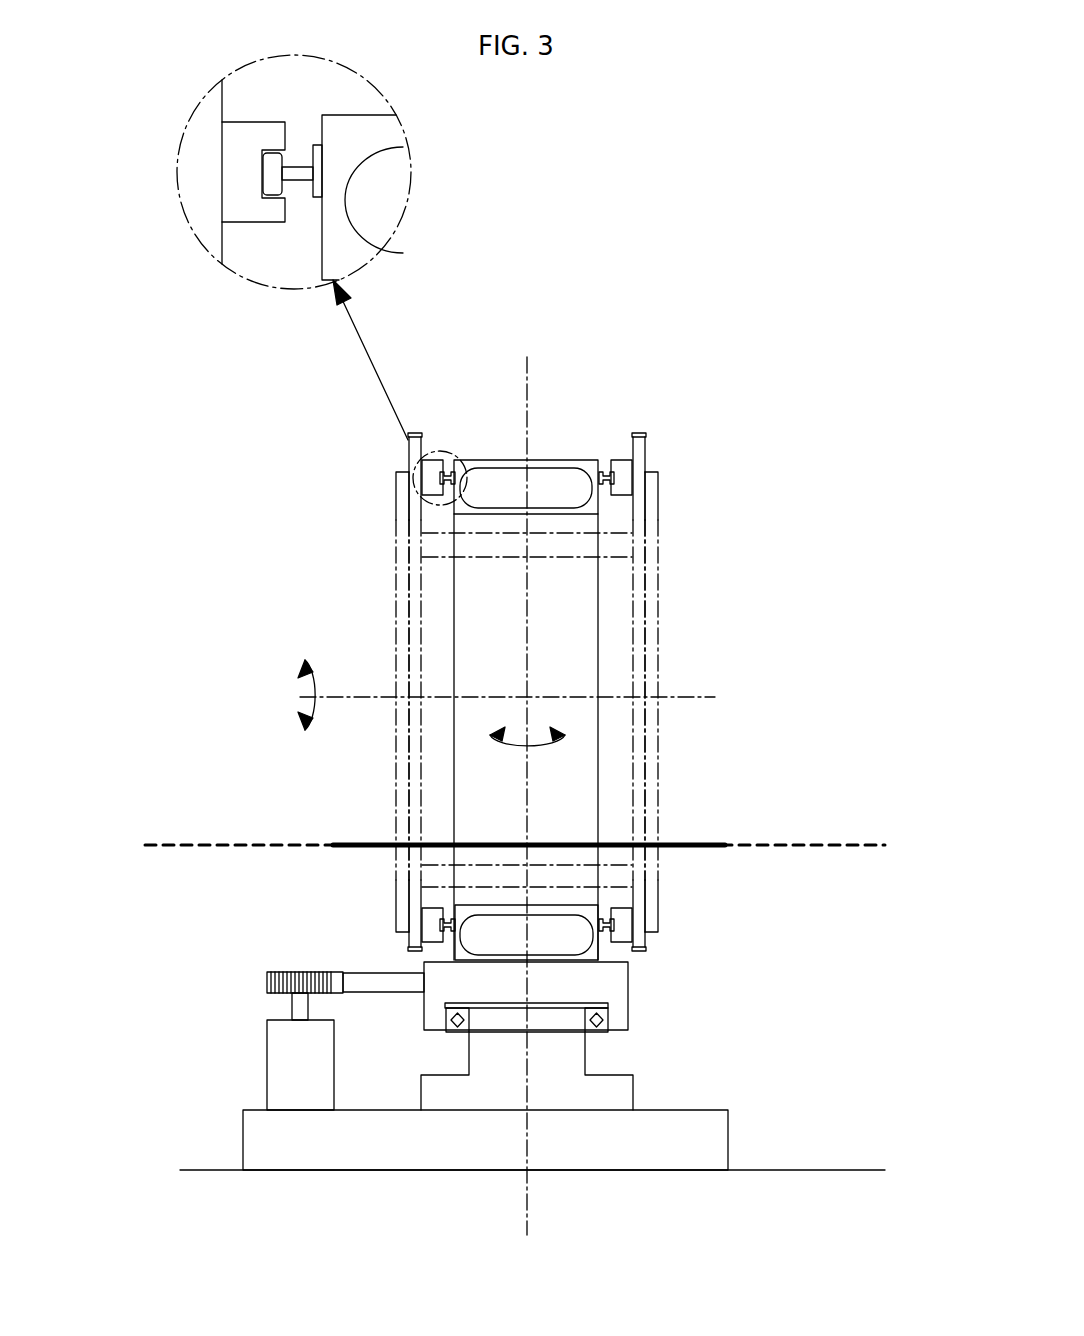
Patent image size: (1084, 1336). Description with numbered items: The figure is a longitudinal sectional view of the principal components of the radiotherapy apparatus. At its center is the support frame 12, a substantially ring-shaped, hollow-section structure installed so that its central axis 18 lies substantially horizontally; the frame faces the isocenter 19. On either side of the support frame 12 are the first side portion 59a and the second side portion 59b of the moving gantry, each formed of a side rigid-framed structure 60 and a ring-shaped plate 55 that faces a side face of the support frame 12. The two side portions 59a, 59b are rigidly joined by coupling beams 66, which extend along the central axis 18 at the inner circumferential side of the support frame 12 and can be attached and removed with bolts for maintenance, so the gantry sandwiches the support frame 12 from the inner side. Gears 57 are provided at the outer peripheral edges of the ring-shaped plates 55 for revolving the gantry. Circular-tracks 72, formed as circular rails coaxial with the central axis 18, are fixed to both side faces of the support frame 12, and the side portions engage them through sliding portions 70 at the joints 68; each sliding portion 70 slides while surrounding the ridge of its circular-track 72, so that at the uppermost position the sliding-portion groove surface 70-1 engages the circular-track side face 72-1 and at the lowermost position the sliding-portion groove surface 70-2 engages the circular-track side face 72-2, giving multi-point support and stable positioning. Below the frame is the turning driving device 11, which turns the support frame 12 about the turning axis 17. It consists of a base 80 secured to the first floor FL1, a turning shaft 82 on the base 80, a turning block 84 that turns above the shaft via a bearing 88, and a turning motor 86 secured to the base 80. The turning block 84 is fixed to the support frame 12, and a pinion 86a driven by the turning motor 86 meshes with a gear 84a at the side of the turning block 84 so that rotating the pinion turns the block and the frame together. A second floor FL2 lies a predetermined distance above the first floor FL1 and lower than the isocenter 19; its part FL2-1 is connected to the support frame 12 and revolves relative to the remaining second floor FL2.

The turning driving device 11 is at (718, 1058).
The support frame 12 is at (535, 460).
The turning axis 17 is at (530, 1200).
The central axis 18 is at (707, 697).
The isocenter 19 is at (528, 697).
The ring-shaped plate 55 is at (408, 458).
The gear 57 is at (413, 432).
The first side portion 59a is at (511, 641).
The second side portion 59b is at (668, 570).
The side rigid-framed structure 60 is at (396, 508).
The coupling beam 66 is at (490, 557).
The joint 68 is at (396, 478).
The sliding portion 70 is at (437, 462).
The sliding-portion groove surface 70-1 is at (270, 150).
The sliding-portion groove surface 70-2 is at (270, 225).
The circular-track 72 is at (450, 470).
The circular-track side face 72-1 is at (265, 165).
The circular-track side face 72-2 is at (265, 180).
The base 80 is at (730, 1143).
The turning shaft 82 is at (633, 1100).
The turning block 84 is at (628, 1021).
The gear 84a is at (355, 992).
The turning motor 86 is at (267, 1045).
The pinion 86a is at (267, 983).
The bearing 88 is at (448, 1033).
The first floor FL1 is at (850, 1170).
The second floor FL2 is at (785, 843).
The second floor FL2-1 is at (365, 843).